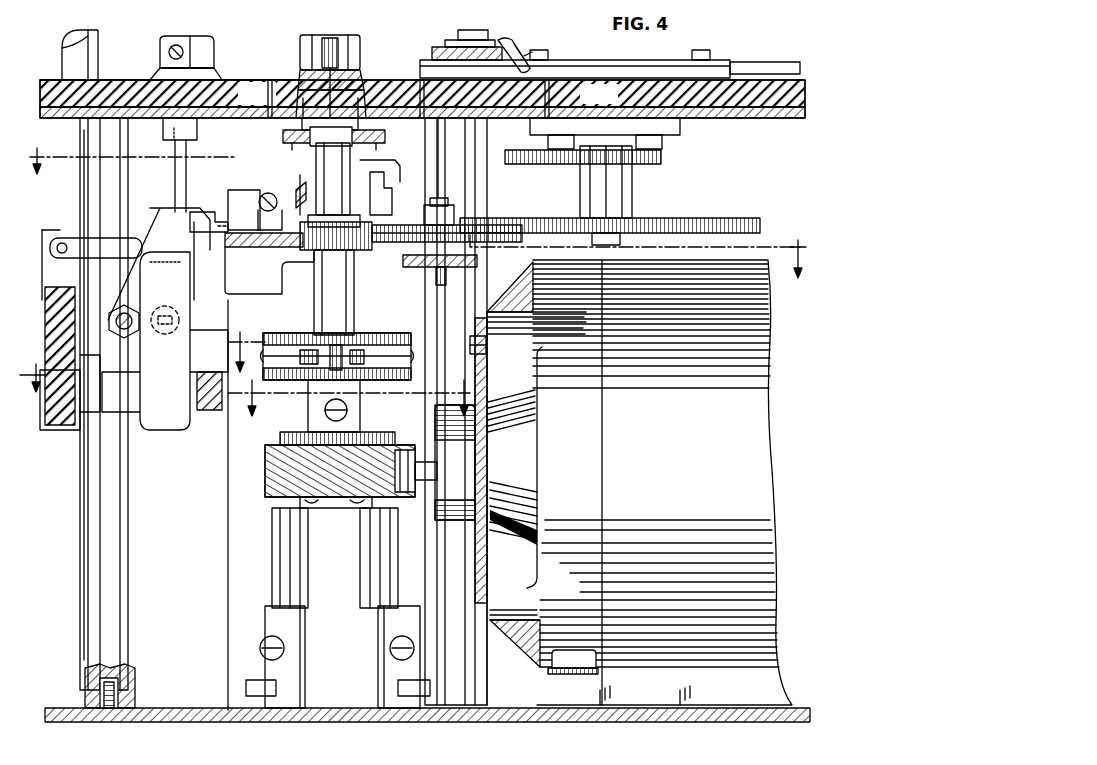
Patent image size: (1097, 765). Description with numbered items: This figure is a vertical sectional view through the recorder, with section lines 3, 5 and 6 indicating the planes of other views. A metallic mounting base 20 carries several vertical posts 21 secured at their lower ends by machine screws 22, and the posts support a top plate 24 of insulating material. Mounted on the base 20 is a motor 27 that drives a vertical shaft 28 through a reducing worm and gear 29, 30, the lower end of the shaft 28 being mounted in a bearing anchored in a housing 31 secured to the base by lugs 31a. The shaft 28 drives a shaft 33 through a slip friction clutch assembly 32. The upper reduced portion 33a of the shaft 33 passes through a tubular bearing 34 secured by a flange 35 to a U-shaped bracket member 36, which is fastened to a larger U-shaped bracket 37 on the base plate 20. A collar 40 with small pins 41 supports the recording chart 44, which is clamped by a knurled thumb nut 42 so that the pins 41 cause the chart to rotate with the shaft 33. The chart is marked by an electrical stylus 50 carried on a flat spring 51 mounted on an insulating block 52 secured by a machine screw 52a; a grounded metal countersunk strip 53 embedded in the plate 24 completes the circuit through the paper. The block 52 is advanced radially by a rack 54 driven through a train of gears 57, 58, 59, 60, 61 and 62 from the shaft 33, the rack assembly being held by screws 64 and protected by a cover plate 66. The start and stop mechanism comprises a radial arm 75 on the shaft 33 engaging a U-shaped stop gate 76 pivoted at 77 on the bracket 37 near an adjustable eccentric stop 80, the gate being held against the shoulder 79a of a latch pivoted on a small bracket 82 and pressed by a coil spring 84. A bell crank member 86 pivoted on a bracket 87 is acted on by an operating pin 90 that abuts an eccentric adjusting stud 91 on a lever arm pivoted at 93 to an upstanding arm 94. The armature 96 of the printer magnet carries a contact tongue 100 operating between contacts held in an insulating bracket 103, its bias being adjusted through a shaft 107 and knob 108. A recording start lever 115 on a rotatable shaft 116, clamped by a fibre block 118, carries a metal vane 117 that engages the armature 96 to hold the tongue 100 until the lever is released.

The section line 3- 3 is at (418, 203).
The section line 5- 5 is at (144, 353).
The section line 6- 6 is at (349, 390).
The mounting base 20 is at (230, 712).
The vertical posts 21 is at (92, 517).
The machine screws 22 is at (118, 712).
The top plate 24 is at (120, 80).
The motor 27 is at (688, 474).
The vertical shaft 28 is at (348, 500).
The worm 29 is at (300, 492).
The gear 30 is at (268, 476).
The housing 31 is at (282, 570).
The lugs 31a is at (380, 650).
The slip friction clutch assembly 32 is at (376, 333).
The shaft 33 is at (347, 296).
The reduced portion 33a is at (354, 64).
The tubular bearing 34 is at (330, 153).
The flange 35 is at (310, 124).
The U-shaped bracket member 36 is at (285, 140).
The U-shaped bracket 37 is at (234, 445).
The collar 40 is at (422, 99).
The pins 41 is at (302, 72).
The thumb nut 42 is at (322, 38).
The recording chart 44 is at (232, 80).
The electrical stylus 50 is at (530, 62).
The flat spring 51 is at (505, 38).
The insulating block 52 is at (445, 50).
The machine screw 52a is at (476, 31).
The grounded metal countersunk strip 53 is at (599, 95).
The rack 54 is at (755, 64).
The gear 57 is at (540, 160).
The gear 58 is at (630, 180).
The gear 59 is at (718, 218).
The gear 60 is at (448, 222).
The gear 61 is at (492, 244).
The gear 62 is at (304, 258).
The screws 64 is at (548, 52).
The cover plate 66 is at (605, 62).
The radial arm 75 is at (342, 250).
The stop gate 76 is at (392, 180).
The pivot 77 is at (396, 165).
The shoulder 79a is at (306, 186).
The adjustable eccentric stop 80 is at (432, 208).
The small bracket 82 is at (268, 252).
The coil spring 84 is at (292, 250).
The bell crank member 86 is at (264, 198).
The bracket 87 is at (240, 195).
The operating pin 90 is at (232, 248).
The eccentric adjusting stud 91 is at (222, 212).
The pivot 93 is at (196, 220).
The upstanding arm 94 is at (160, 232).
The armature 96 is at (150, 283).
The contact tongue 100 is at (66, 240).
The insulating bracket 103 is at (66, 432).
The shaft 107 is at (182, 173).
The adjusting knob 108 is at (195, 40).
The recording start lever 115 is at (70, 52).
The rotatable shaft 116 is at (88, 190).
The metal vane 117 is at (150, 428).
The fibre block 118 is at (210, 410).